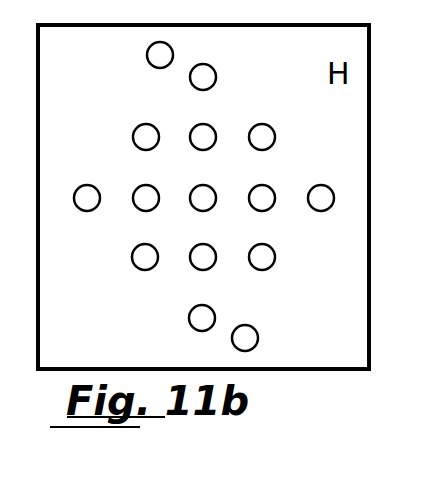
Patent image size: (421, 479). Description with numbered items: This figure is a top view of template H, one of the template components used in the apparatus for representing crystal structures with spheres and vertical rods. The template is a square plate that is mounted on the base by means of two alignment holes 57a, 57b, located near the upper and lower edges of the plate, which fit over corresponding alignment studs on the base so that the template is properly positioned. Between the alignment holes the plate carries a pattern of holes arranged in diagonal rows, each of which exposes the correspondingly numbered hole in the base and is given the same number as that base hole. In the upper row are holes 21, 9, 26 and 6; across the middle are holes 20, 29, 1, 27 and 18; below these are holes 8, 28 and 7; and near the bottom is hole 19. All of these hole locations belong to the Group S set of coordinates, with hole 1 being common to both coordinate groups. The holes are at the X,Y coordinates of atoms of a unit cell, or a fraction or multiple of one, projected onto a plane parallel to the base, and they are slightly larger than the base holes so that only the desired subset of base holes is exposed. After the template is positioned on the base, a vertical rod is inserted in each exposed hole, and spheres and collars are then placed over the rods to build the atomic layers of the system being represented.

The alignment hole 57a is at (173, 52).
The hole 21 is at (216, 73).
The hole 9 is at (158, 130).
The hole 26 is at (211, 127).
The hole 6 is at (274, 130).
The hole 20 is at (98, 190).
The hole 29 is at (157, 190).
The hole 1 is at (214, 190).
The hole 27 is at (273, 190).
The hole 18 is at (330, 188).
The hole 8 is at (156, 249).
The hole 28 is at (211, 247).
The hole 7 is at (273, 250).
The hole 19 is at (213, 310).
The alignment hole 57b is at (256, 331).